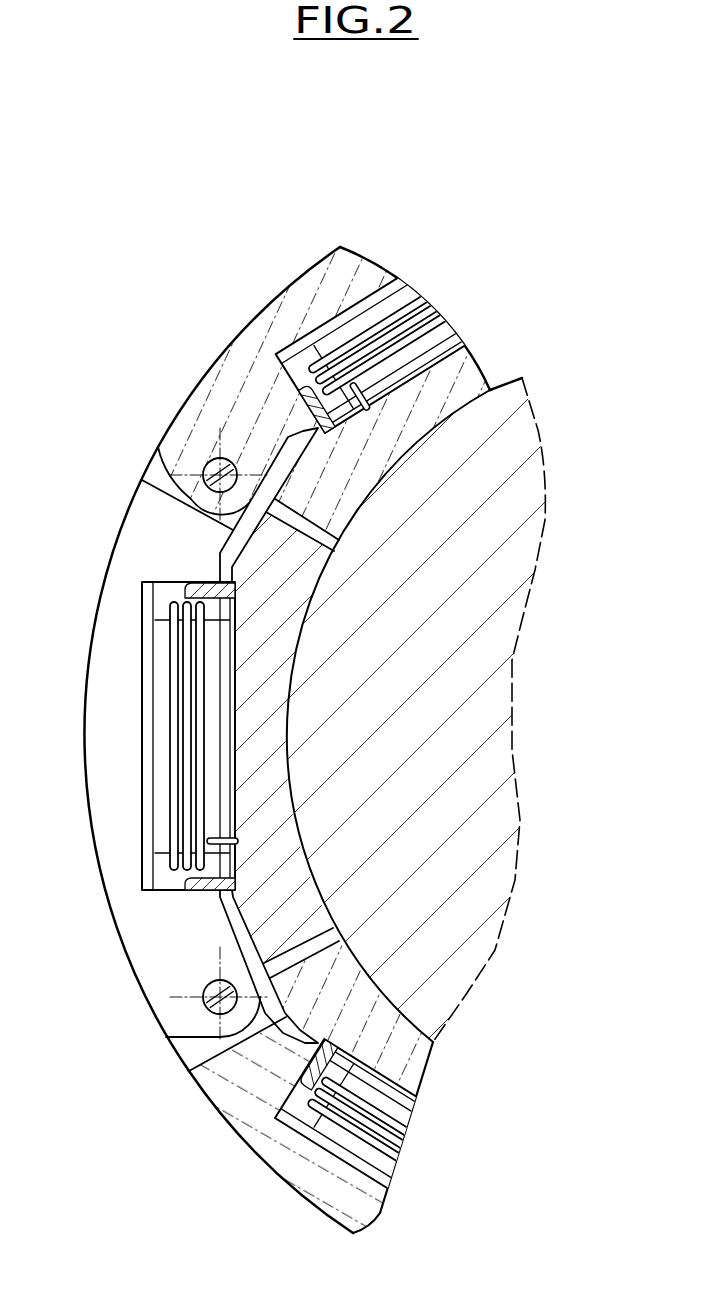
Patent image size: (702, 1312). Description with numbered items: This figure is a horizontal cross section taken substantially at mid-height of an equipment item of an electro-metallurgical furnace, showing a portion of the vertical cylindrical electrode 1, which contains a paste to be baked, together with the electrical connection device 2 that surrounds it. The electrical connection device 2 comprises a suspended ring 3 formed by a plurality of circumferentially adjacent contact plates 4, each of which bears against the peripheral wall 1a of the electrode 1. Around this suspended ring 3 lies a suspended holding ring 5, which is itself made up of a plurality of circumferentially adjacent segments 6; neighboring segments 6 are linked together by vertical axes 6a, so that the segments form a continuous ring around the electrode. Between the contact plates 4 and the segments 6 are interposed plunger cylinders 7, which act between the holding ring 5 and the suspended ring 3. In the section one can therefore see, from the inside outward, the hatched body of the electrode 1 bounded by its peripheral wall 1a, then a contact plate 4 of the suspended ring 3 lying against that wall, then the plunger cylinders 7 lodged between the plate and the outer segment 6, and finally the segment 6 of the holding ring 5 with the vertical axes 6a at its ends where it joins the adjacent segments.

The vertical cylindrical electrode 1 is at (503, 698).
The peripheral wall 1a is at (497, 389).
The electrical connection device 2 is at (153, 392).
The suspended ring 3 is at (263, 927).
The contact plate 4 is at (243, 900).
The suspended holding ring 5 is at (109, 651).
The segment 6 is at (86, 706).
The vertical axis 6a is at (206, 483).
The plunger cylinder 7 is at (188, 770).